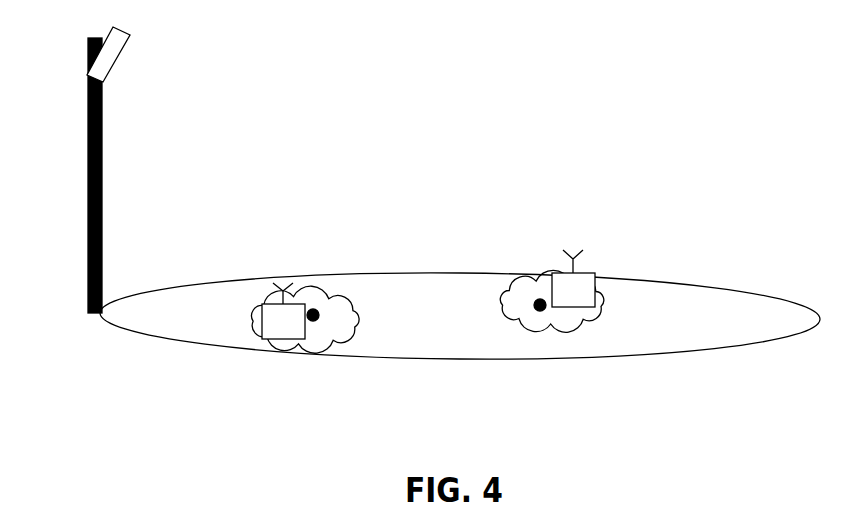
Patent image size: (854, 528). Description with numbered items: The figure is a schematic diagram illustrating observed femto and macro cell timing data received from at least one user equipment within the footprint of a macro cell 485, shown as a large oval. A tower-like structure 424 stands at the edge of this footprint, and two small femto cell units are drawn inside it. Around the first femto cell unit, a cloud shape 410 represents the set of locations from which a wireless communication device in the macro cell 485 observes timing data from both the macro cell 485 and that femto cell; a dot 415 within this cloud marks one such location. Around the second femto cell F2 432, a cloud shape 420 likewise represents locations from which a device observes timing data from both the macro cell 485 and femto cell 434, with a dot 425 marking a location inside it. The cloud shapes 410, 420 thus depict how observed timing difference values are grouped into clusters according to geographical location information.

The base station / antenna tower 424 is at (88, 162).
The macro cell 485 is at (132, 334).
The cloud shape 410 is at (355, 317).
The femto cell F2 432 is at (258, 333).
The first location 415 is at (313, 309).
The cloud shape 420 is at (518, 322).
The femto cell 434 is at (588, 307).
The second location 425 is at (540, 299).